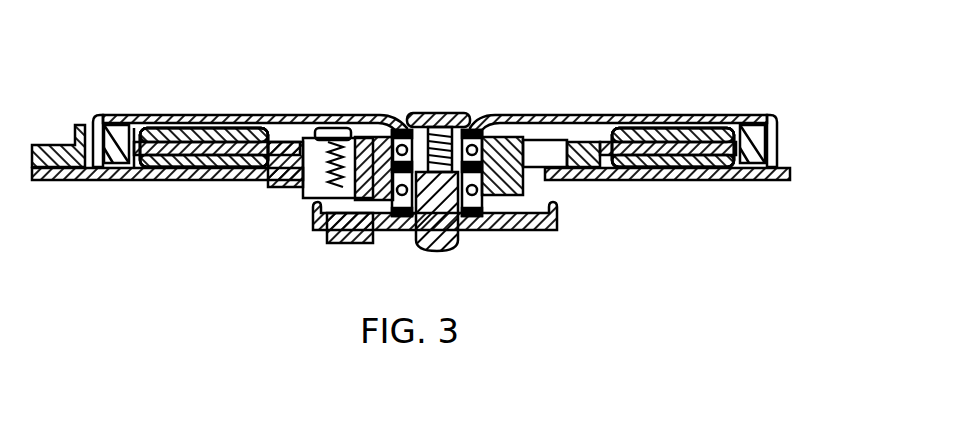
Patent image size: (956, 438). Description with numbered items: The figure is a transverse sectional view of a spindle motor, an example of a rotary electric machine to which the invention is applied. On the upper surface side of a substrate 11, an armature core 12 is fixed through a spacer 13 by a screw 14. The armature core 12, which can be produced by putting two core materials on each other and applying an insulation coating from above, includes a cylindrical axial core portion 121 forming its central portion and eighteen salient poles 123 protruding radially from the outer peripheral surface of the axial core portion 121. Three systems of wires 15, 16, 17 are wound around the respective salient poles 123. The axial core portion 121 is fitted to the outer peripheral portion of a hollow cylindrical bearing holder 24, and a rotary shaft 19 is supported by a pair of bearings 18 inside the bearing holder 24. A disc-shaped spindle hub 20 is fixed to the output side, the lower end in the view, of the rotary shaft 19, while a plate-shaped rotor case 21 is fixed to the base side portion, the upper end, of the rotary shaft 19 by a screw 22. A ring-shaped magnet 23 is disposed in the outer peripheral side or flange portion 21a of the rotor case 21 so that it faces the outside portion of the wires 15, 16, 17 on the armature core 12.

The substrate 11 is at (617, 170).
The armature core 12 is at (303, 137).
The spacer 13 is at (287, 168).
The screw 14 is at (345, 117).
The wire 15 is at (192, 113).
The wire 16 is at (389, 104).
The wire 17 is at (389, 104).
The bearing 18 is at (477, 115).
The rotary shaft 19 is at (440, 250).
The spindle hub 20 is at (522, 229).
The rotor case 21 is at (596, 113).
The flange portion 21a is at (97, 160).
The screw 22 is at (442, 117).
The ring-shaped magnet 23 is at (113, 160).
The bearing holder 24 is at (398, 117).
The axial core portion 121 is at (365, 115).
The salient pole 123 is at (238, 132).